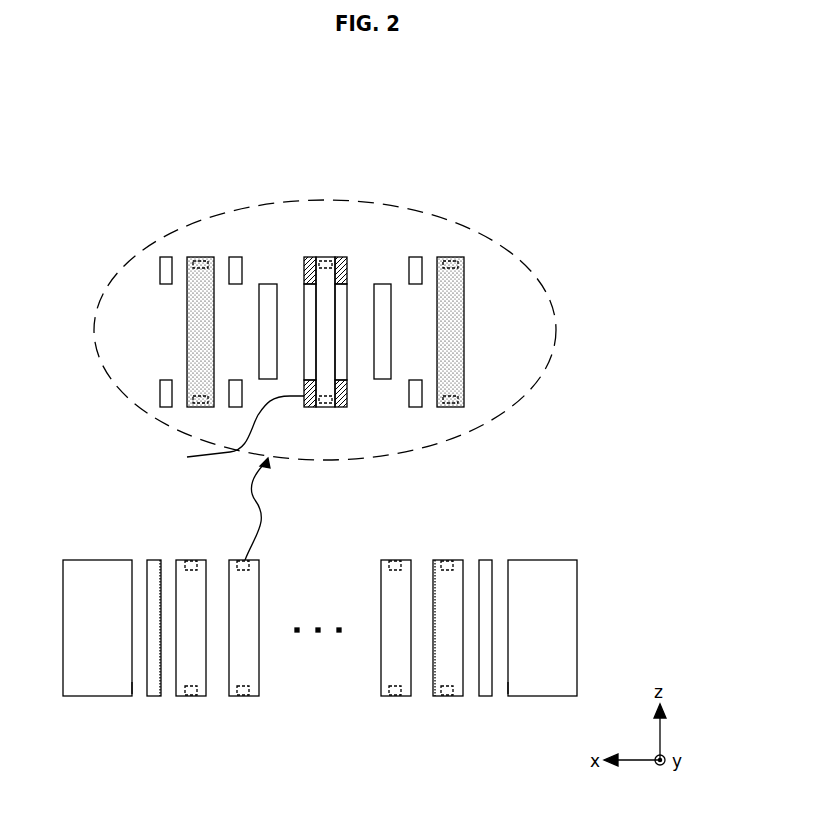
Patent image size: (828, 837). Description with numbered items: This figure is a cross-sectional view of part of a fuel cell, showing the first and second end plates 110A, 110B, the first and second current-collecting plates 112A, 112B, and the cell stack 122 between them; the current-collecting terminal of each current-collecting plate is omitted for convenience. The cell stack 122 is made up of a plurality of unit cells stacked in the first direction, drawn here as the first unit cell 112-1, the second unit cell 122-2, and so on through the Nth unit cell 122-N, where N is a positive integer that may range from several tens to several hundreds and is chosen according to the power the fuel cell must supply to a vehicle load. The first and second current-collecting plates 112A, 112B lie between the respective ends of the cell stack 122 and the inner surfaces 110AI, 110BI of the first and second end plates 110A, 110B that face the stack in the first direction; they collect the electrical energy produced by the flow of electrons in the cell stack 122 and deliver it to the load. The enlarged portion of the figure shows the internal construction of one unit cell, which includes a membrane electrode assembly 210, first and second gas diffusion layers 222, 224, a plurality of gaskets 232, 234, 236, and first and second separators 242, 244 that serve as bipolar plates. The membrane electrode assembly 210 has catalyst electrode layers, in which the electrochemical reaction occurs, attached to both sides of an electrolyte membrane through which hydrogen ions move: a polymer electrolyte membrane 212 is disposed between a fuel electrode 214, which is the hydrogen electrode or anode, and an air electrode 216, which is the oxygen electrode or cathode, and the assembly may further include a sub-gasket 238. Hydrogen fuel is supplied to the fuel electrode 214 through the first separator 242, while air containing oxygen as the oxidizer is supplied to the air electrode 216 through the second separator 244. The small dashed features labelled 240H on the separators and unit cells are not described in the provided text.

The membrane electrode assembly 210 is at (325, 262).
The polymer electrolyte membrane 212 is at (325, 268).
The fuel electrode 214 is at (310, 303).
The air electrode 216 is at (342, 303).
The first gas diffusion layer 222 is at (268, 284).
The second gas diffusion layer 224 is at (383, 284).
The gasket 232 is at (235, 257).
The gasket 234 is at (166, 257).
The gasket 236 is at (415, 257).
The sub-gasket 238 is at (231, 431).
The first separator 242 is at (200, 257).
The second separator 244 is at (450, 257).
The hole 240H is at (455, 270).
The first end plate 110A is at (97, 560).
The second end plate 110B is at (540, 560).
The first current-collecting plate 112A is at (154, 560).
The second current-collecting plate 112B is at (486, 560).
The inner surface of first end plate 110AI is at (132, 682).
The inner surface of second end plate 110BI is at (508, 682).
The unit cell 112-1 is at (181, 696).
The unit cell 122-2 is at (252, 696).
The unit cell 122-N is at (455, 696).
The cell stack 122 is at (460, 747).